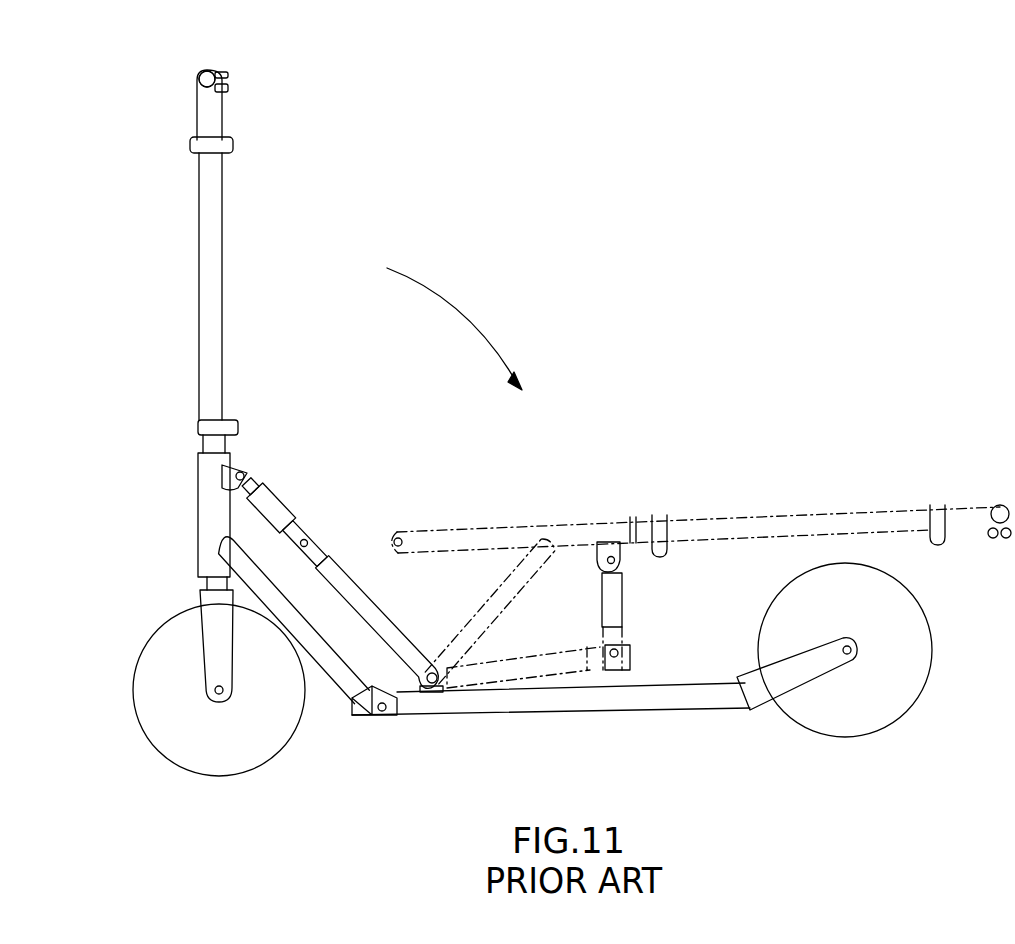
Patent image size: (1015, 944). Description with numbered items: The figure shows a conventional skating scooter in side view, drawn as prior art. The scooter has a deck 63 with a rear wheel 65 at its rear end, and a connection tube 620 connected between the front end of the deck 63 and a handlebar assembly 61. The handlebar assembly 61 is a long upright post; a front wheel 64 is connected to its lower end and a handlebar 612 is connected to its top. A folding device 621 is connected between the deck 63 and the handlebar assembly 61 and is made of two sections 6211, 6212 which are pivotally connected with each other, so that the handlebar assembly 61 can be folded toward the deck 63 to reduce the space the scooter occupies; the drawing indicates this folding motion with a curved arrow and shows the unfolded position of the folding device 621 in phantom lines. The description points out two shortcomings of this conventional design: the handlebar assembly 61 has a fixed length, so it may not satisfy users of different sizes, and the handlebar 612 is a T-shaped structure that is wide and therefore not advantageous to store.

The handlebar assembly 61 is at (248, 117).
The handlebar 612 is at (208, 82).
The front wheel 64 is at (173, 712).
The connection tube 620 is at (333, 660).
The folding device 621 is at (342, 525).
The section 6211 is at (320, 473).
The section 6212 is at (385, 625).
The deck 63 is at (620, 700).
The rear wheel 65 is at (888, 703).